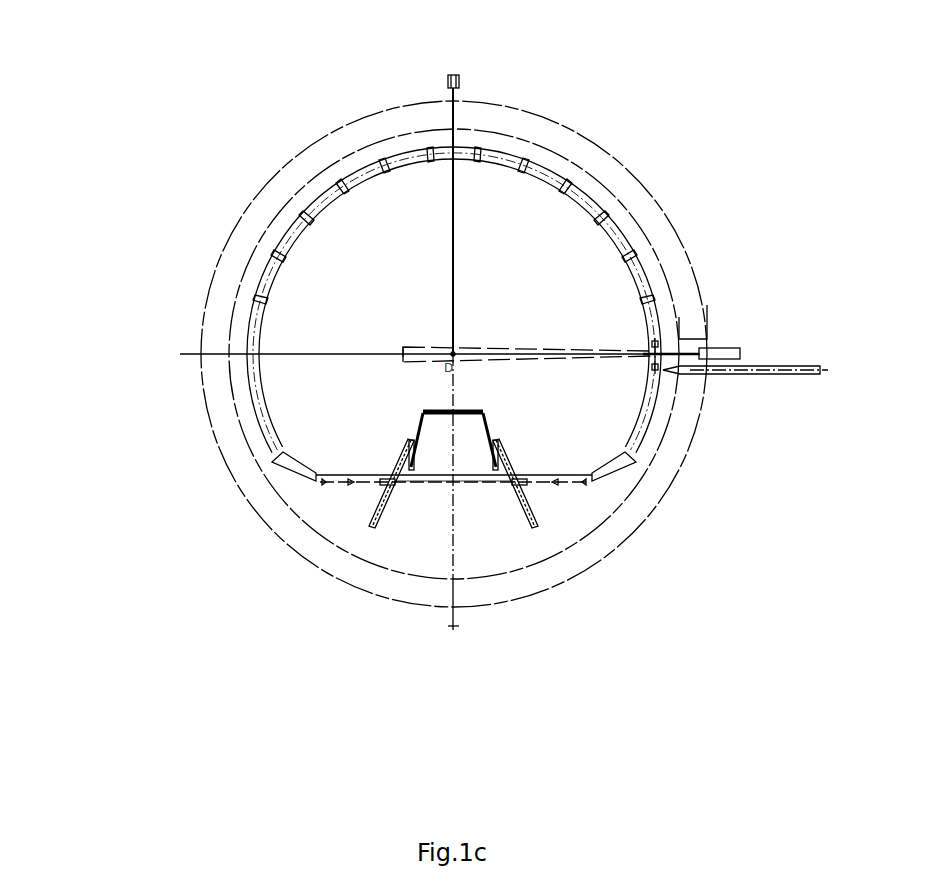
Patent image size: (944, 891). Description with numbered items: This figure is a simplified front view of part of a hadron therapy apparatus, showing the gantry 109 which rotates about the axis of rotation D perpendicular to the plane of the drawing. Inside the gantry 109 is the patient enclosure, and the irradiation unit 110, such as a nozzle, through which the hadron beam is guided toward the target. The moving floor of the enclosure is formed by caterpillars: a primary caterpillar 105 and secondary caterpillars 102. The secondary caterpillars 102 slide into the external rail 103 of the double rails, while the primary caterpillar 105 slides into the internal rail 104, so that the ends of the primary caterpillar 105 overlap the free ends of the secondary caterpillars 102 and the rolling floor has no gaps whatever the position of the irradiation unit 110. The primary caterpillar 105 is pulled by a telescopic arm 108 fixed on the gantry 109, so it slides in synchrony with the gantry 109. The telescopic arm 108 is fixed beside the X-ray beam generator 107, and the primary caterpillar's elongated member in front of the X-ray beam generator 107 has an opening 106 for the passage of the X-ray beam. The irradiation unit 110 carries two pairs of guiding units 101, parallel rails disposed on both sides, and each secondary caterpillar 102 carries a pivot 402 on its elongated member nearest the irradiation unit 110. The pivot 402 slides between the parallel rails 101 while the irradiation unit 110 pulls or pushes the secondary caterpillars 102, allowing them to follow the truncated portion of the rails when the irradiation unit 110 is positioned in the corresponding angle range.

The guiding units 101 is at (385, 505).
The secondary caterpillar 102 is at (344, 484).
The external rail 103 is at (250, 415).
The internal rail 104 is at (333, 480).
The primary caterpillar 105 is at (570, 182).
The opening 106 is at (657, 350).
The X-ray beam generator 107 is at (720, 352).
The telescopic arm 108 is at (787, 367).
The gantry 109 is at (515, 118).
The irradiation unit 110 is at (493, 420).
The pivot 402 is at (396, 479).